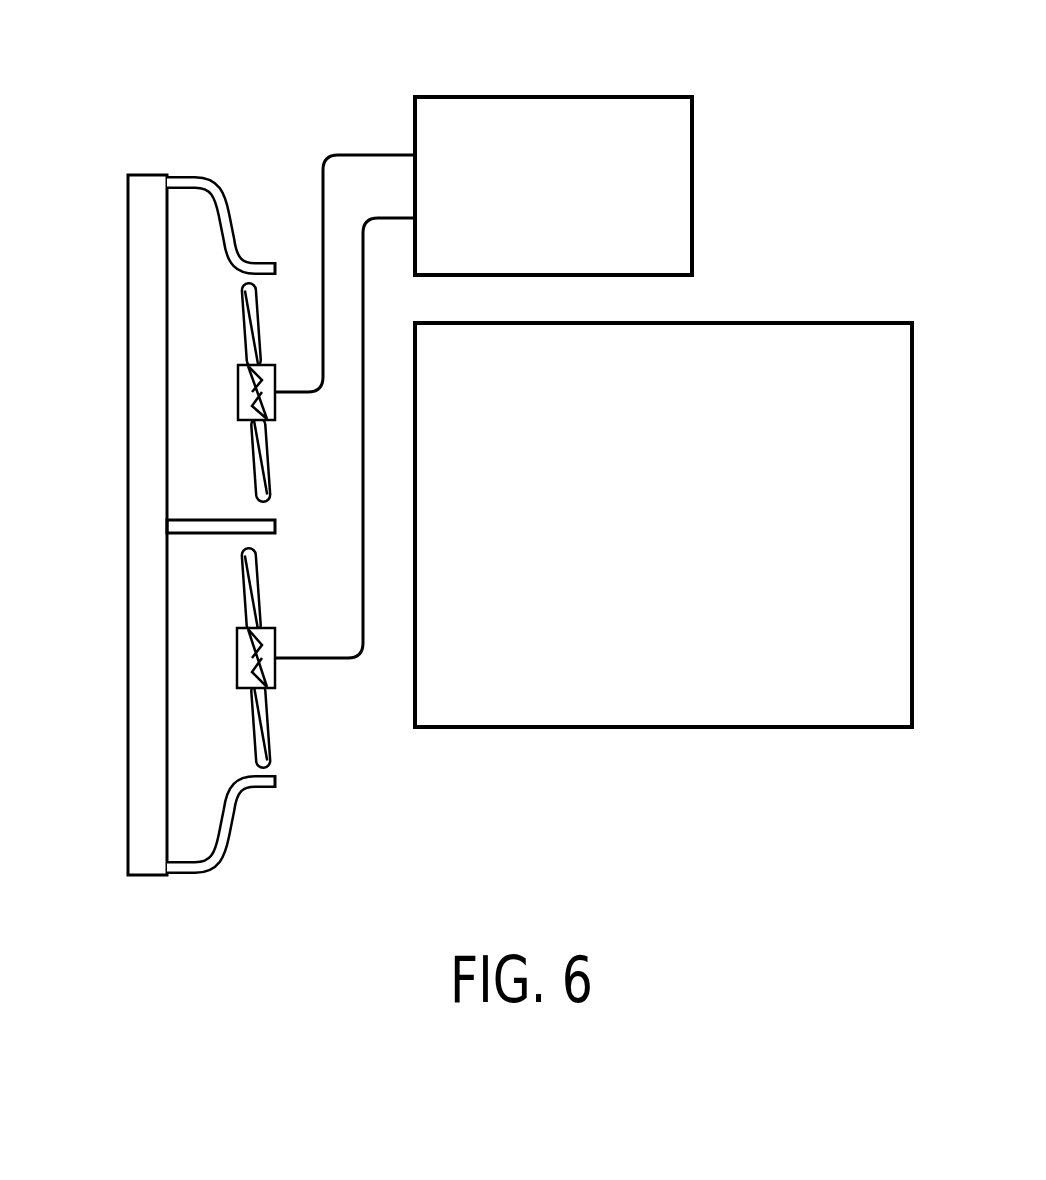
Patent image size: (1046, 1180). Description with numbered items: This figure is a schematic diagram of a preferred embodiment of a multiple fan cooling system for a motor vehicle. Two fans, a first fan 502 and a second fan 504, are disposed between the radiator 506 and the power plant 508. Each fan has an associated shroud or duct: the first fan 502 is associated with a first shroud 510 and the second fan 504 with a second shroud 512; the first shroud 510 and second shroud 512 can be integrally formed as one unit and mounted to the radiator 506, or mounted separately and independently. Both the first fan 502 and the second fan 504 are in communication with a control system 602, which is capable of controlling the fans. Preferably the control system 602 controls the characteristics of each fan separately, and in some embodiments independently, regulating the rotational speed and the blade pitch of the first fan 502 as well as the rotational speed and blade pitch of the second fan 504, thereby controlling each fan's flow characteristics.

The first fan 502 is at (236, 390).
The second fan 504 is at (235, 660).
The radiator 506 is at (138, 783).
The power plant 508 is at (693, 543).
The first shroud 510 is at (193, 175).
The second shroud 512 is at (193, 877).
The control system 602 is at (541, 115).